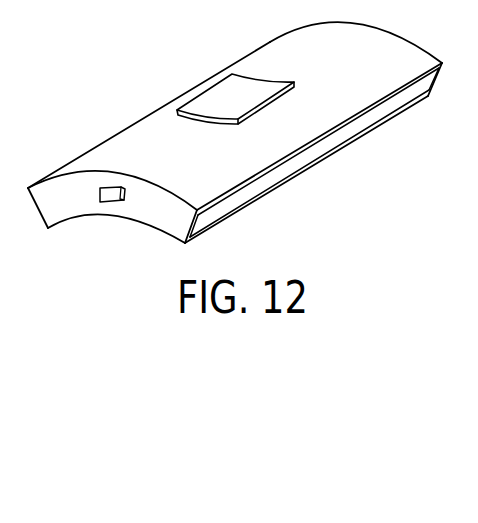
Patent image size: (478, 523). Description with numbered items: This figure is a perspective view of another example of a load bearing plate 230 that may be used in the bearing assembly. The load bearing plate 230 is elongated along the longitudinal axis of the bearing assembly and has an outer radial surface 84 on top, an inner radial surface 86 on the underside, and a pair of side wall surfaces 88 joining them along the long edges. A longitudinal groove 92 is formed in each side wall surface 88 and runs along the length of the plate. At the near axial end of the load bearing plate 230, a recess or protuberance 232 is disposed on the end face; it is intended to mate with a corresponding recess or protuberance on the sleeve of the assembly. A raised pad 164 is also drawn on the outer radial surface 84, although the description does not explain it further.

The load bearing plate 230 is at (143, 78).
The outer radial surface 84 is at (125, 155).
The inner radial surface 86 is at (118, 216).
The side wall surface 88 is at (252, 200).
The longitudinal groove 92 is at (338, 141).
The pad 164 is at (237, 92).
The recess or protuberance 232 is at (100, 193).